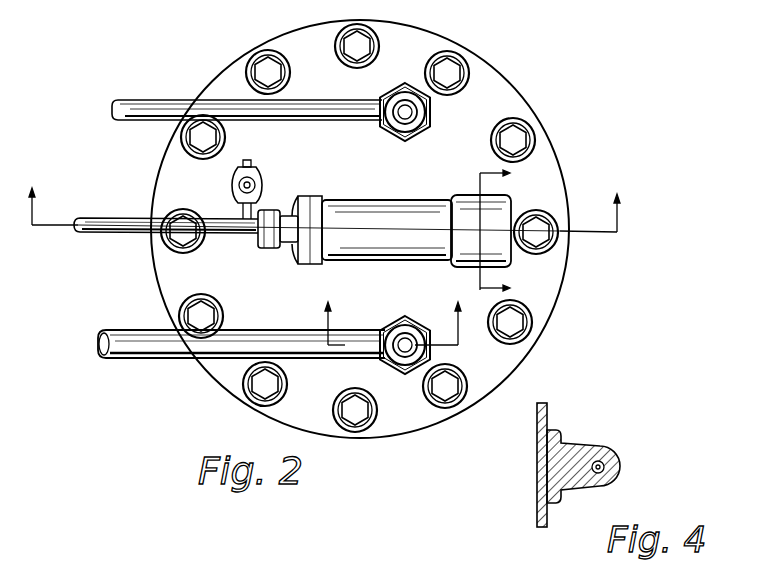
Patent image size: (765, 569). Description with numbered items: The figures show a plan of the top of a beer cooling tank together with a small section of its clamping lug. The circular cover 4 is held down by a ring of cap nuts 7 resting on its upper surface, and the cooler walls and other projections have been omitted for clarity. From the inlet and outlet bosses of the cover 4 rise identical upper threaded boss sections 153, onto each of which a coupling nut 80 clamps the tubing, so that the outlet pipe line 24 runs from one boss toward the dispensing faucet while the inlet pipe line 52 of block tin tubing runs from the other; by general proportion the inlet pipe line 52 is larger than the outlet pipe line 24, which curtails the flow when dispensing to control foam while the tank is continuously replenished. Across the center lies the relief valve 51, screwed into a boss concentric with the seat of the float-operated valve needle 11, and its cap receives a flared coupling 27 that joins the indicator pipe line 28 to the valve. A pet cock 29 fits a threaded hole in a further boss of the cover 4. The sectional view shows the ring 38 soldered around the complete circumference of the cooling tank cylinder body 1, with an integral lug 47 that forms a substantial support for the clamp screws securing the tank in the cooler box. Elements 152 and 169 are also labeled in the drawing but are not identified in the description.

In FIG. 2, the cooling tank cylinder body 1 is at (324, 210).
In FIG. 4, the cooling tank cylinder body 1 is at (547, 421).
In FIG. 2, the cover 4 is at (552, 183).
In FIG. 2, the cap nuts 7 is at (520, 138).
In FIG. 2, the valve needle 11 is at (393, 323).
In FIG. 2, the outlet pipe line 24 is at (130, 104).
In FIG. 2, the flared coupling 27 is at (276, 247).
In FIG. 2, the indicator pipe line 28 is at (88, 224).
In FIG. 2, the pet cock 29 is at (260, 178).
In FIG. 4, the ring 38 is at (560, 432).
In FIG. 4, the lugs 47 is at (607, 452).
In FIG. 2, the relief valve 51 is at (463, 193).
In FIG. 2, the inlet pipe line 52 is at (119, 346).
In FIG. 2, the coupling nut 80 is at (417, 140).
In FIG. 2, the cylinder body 152 is at (362, 568).
In FIG. 2, the upper threaded boss section 153 is at (388, 92).
In FIG. 2, the bolt 169 is at (470, 78).